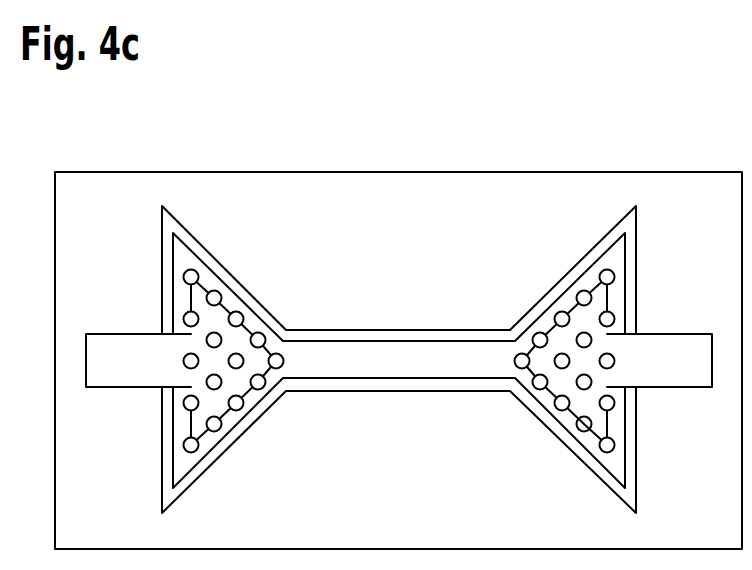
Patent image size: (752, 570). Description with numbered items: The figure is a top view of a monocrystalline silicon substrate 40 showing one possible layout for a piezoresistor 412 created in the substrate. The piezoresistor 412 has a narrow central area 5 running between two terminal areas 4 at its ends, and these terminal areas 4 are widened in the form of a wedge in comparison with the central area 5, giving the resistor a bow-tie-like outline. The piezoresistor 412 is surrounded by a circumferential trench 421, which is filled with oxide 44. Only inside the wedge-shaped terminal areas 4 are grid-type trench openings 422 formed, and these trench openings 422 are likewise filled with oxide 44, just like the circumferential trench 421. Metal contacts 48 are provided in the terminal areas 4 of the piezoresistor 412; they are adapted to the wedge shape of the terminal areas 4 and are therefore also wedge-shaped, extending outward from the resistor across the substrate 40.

The monocrystalline silicon substrate 40 is at (142, 183).
The metal contacts 48 is at (675, 345).
The terminal areas 4 is at (207, 438).
The piezoresistor 412 is at (372, 352).
The circumferential trench 421 is at (412, 383).
The grid-type trench openings 422 is at (584, 420).
The oxide 44 is at (399, 359).
The central area 5 is at (332, 365).